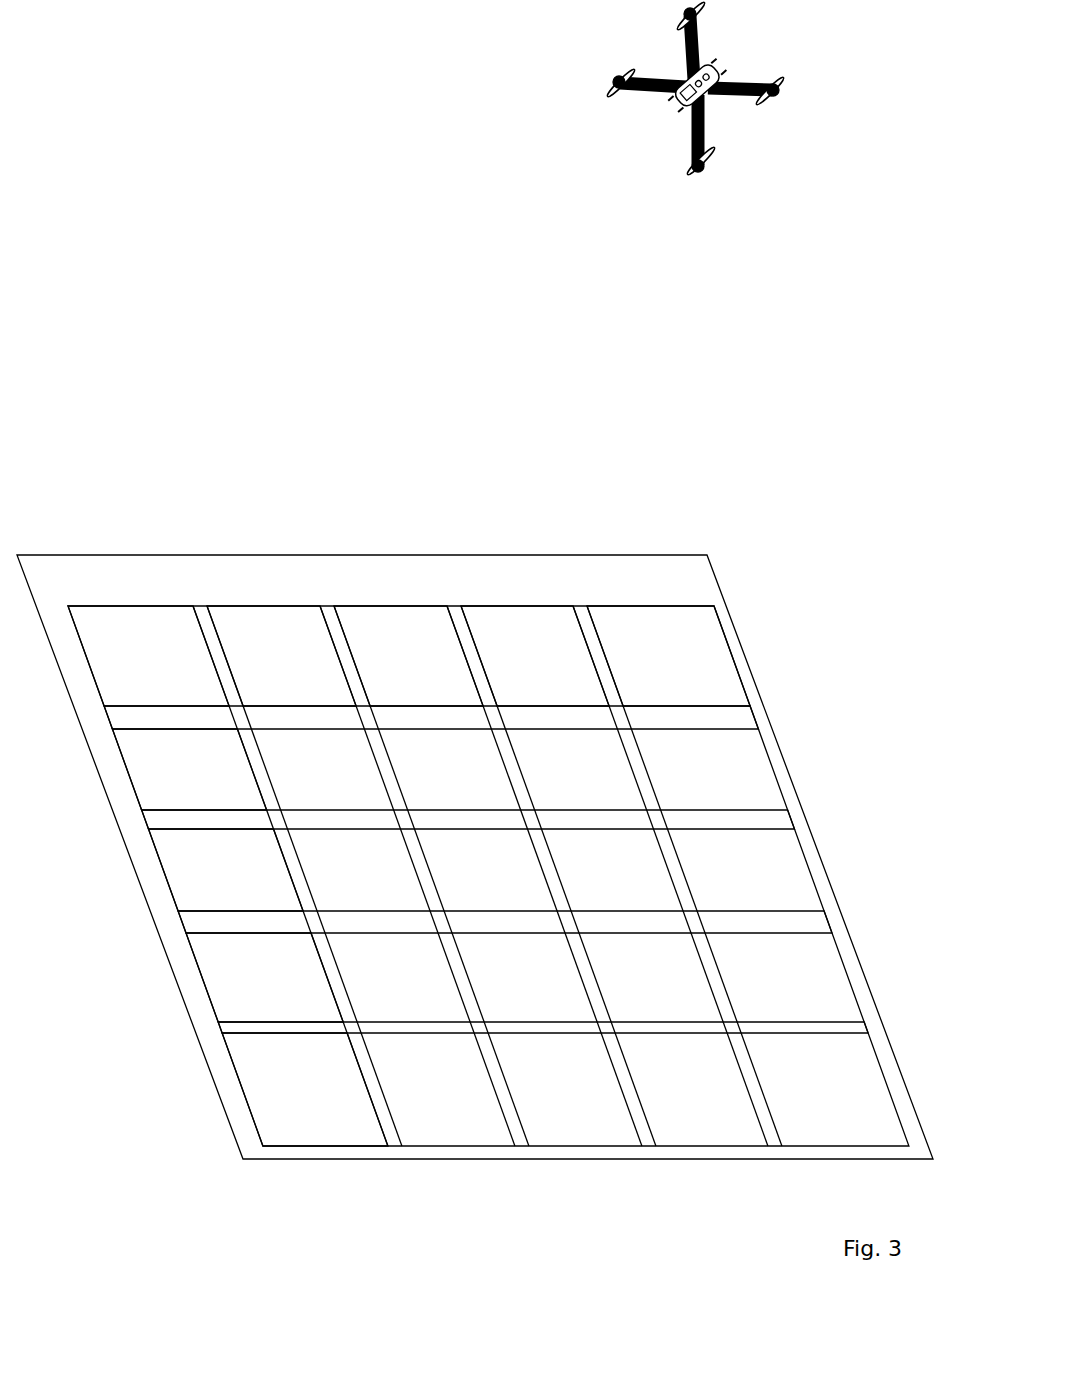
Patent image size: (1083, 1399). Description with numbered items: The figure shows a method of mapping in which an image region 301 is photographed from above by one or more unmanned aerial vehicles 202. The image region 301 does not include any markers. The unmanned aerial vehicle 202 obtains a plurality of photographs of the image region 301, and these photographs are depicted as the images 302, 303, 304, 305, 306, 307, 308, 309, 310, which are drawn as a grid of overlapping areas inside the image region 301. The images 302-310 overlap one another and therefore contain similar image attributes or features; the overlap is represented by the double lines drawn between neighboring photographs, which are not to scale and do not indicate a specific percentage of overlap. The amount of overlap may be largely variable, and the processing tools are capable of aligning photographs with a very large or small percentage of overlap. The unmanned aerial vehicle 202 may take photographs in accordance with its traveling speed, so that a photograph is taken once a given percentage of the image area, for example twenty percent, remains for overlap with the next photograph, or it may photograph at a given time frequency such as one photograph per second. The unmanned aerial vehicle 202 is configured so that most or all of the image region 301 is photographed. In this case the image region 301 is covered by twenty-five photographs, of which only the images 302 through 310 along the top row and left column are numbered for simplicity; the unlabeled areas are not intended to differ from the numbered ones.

The unmanned aerial vehicle 202 is at (695, 92).
The image region 301 is at (475, 844).
The image 302 is at (148, 656).
The image 303 is at (281, 656).
The image 304 is at (408, 656).
The image 305 is at (535, 656).
The image 306 is at (668, 656).
The image 307 is at (189, 769).
The image 308 is at (226, 870).
The image 309 is at (264, 977).
The image 310 is at (305, 1089).